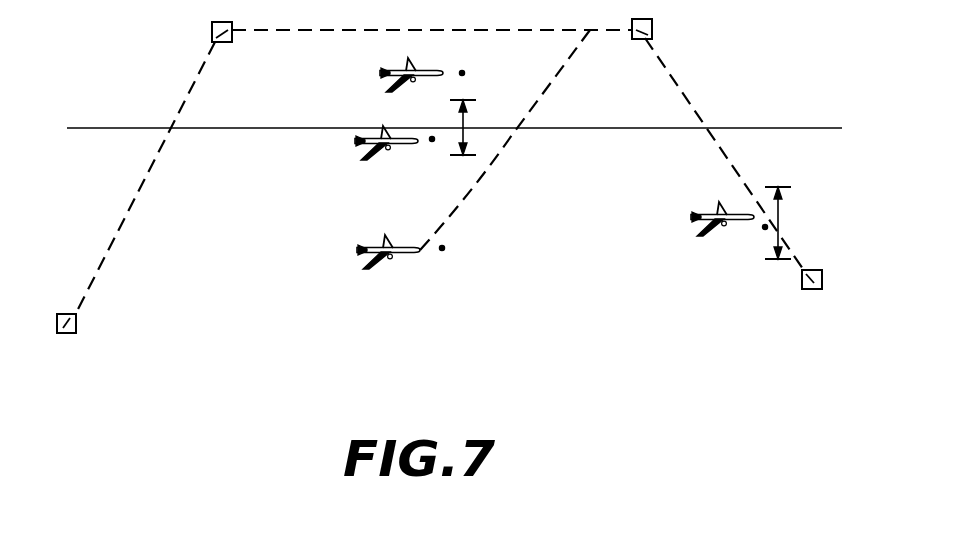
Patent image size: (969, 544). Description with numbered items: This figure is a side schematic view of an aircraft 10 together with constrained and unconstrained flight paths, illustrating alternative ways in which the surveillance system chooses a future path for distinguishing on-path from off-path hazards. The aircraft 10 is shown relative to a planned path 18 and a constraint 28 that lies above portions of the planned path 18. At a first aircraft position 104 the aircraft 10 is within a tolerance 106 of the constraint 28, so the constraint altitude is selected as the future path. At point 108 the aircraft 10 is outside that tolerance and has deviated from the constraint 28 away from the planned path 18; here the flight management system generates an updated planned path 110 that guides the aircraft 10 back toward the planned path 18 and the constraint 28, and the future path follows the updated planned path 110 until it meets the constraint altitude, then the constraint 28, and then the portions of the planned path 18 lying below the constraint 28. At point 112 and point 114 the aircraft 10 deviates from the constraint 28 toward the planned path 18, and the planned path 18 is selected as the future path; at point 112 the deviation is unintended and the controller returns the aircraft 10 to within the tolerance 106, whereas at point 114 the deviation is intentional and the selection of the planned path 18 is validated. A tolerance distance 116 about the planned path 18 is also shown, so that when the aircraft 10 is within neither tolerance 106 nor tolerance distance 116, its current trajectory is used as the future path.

The aircraft 10 is at (388, 73).
The planned path 18 is at (103, 250).
The constraint 28 is at (260, 128).
The first aircraft position 104 is at (432, 141).
The tolerance 106 is at (466, 117).
The point 108 is at (442, 250).
The updated planned path 110 is at (489, 170).
The point 112 is at (464, 73).
The point 114 is at (765, 229).
The tolerance distance 116 is at (783, 208).